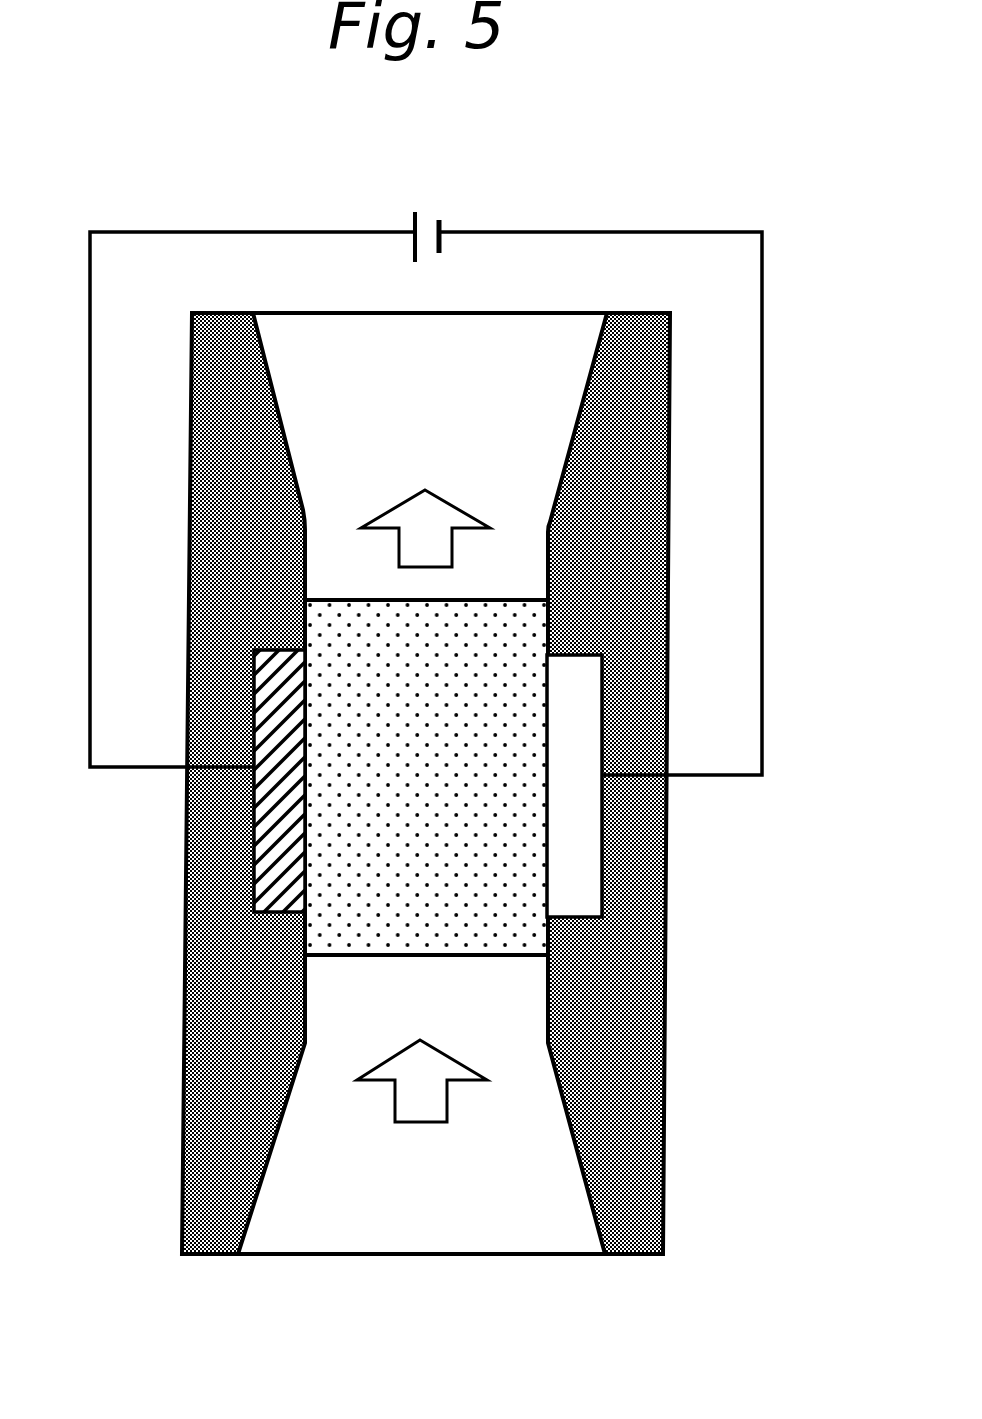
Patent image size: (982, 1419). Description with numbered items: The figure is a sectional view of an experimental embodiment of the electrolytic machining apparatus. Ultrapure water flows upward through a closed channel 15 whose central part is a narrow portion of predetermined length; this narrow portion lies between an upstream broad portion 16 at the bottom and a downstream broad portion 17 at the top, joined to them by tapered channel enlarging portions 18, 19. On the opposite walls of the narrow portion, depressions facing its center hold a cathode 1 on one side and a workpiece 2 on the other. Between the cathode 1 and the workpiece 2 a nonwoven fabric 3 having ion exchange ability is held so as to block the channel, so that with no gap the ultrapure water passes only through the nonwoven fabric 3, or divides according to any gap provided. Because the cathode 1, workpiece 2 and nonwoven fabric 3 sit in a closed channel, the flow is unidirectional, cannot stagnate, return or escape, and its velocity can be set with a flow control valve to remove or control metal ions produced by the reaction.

The cathode 1 is at (580, 843).
The workpiece 2 is at (267, 825).
The nonwoven fabric 3 is at (373, 900).
The channel 15 is at (500, 993).
The upstream broad portion 16 is at (320, 1198).
The downstream broad portion 17 is at (540, 372).
The tapered channel enlarging portion 18 is at (280, 1095).
The tapered channel enlarging portion 19 is at (580, 432).